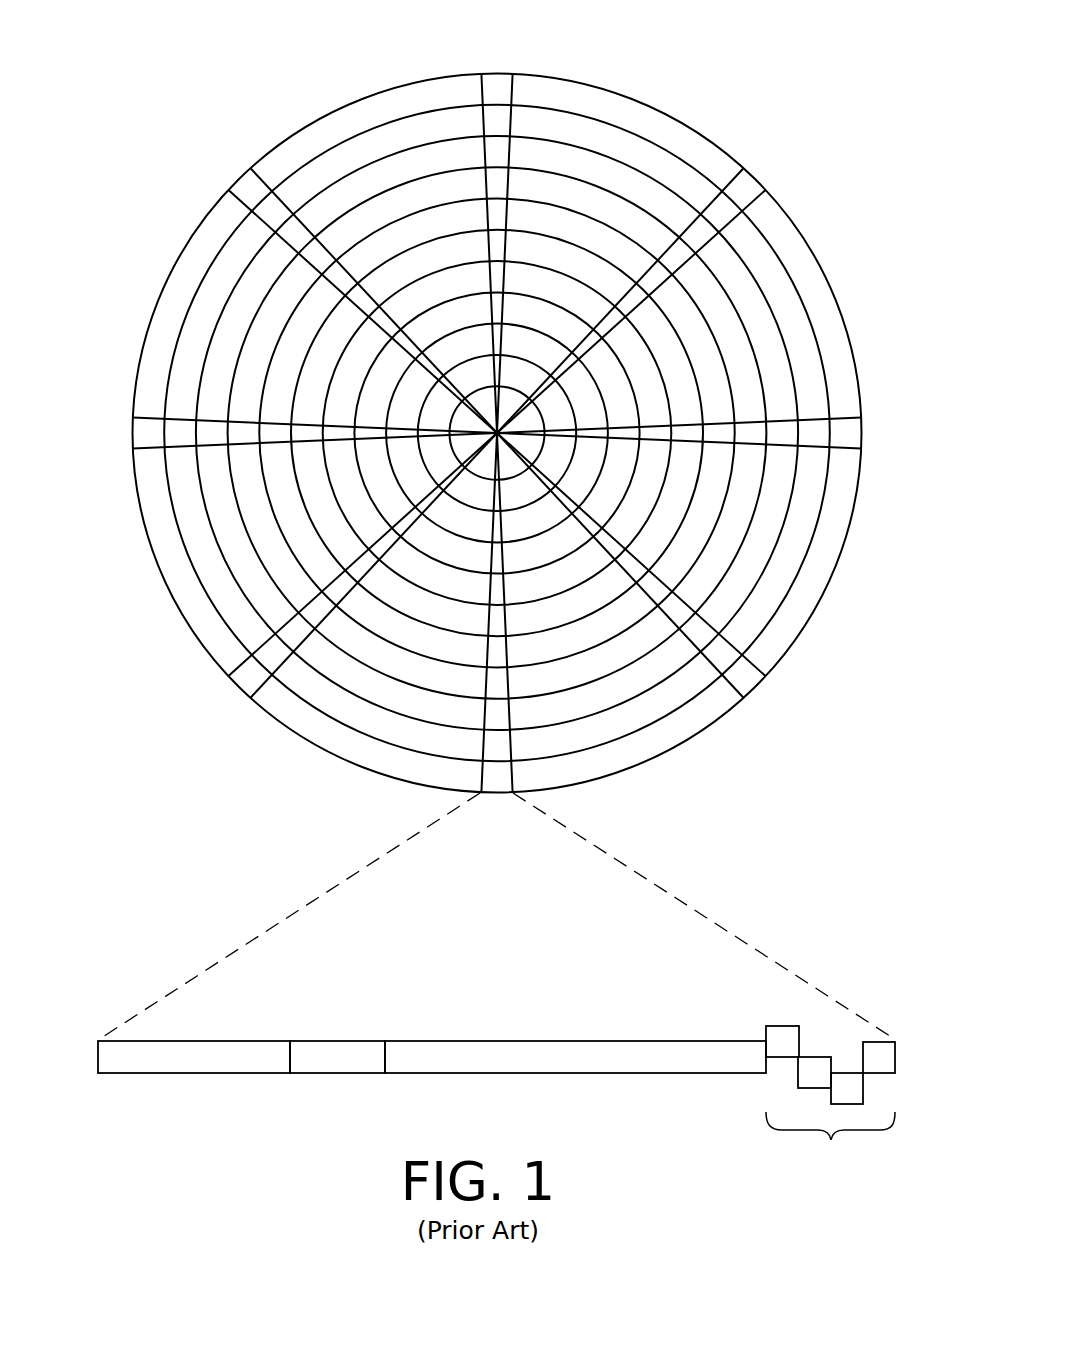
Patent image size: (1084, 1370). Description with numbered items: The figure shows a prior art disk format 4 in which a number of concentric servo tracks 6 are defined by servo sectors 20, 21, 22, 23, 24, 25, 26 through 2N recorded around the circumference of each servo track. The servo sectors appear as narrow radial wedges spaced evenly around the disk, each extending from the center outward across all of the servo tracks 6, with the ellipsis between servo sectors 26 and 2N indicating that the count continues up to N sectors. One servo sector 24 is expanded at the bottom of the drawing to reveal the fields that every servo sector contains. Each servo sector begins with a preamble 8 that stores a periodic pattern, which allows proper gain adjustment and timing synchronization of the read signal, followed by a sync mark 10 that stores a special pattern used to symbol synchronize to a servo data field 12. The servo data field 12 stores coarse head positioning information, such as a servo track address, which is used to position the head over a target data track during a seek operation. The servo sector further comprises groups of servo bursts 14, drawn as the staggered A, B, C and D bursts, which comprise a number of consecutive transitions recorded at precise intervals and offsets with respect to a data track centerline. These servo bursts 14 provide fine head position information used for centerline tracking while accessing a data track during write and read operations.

The disk format 4 is at (228, 80).
The servo tracks 6 is at (620, 147).
The servo sector 20 is at (497, 86).
The servo sector 21 is at (746, 188).
The servo sector 22 is at (853, 437).
The servo sector 23 is at (746, 682).
The servo sector 24 is at (333, 878).
The servo sector 25 is at (243, 682).
The servo sector 26 is at (138, 434).
The servo sector 2N is at (245, 190).
The preamble 8 is at (171, 1073).
The sync mark 10 is at (334, 1073).
The servo data field 12 is at (560, 1073).
The servo bursts 14 is at (752, 1005).